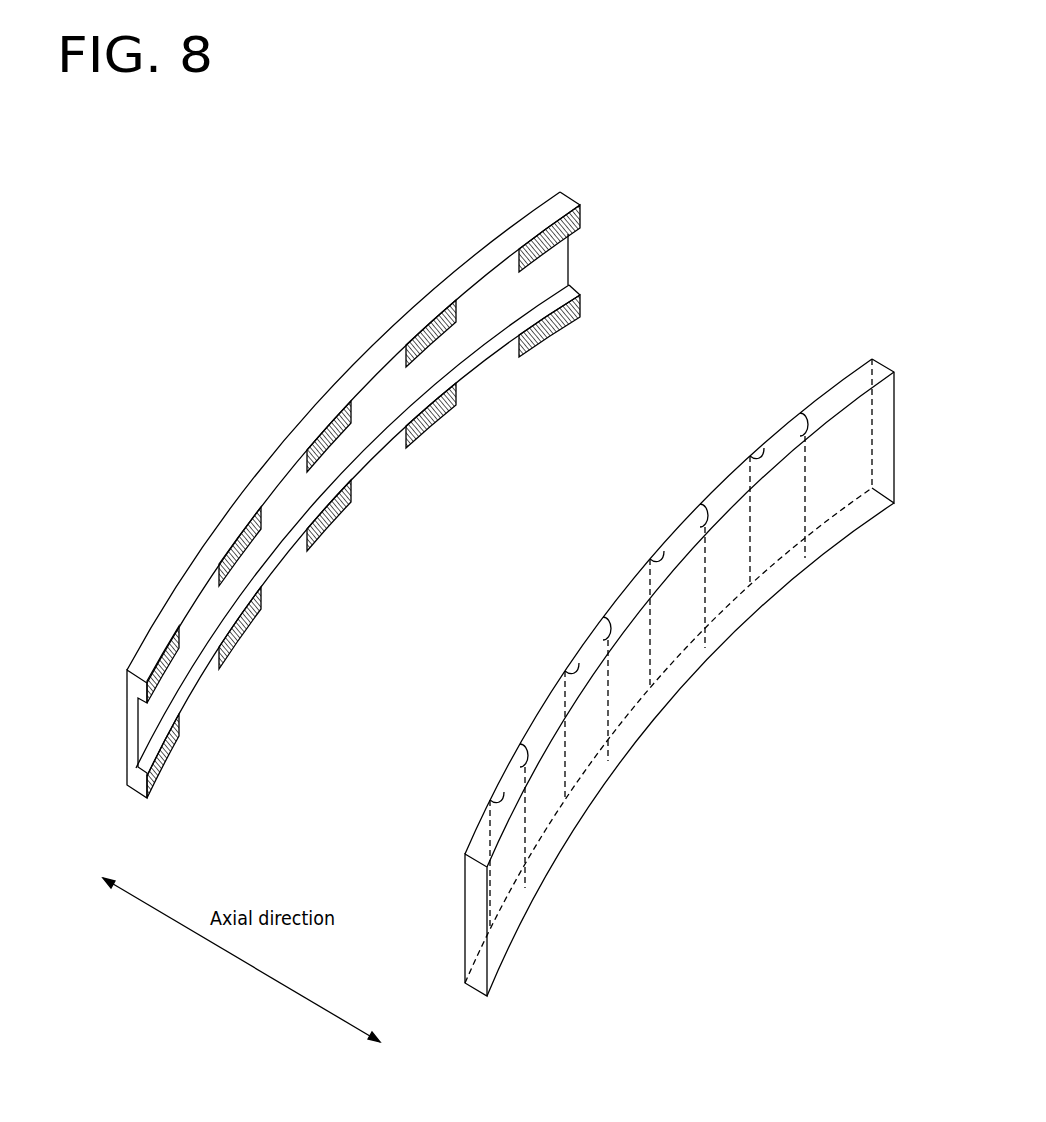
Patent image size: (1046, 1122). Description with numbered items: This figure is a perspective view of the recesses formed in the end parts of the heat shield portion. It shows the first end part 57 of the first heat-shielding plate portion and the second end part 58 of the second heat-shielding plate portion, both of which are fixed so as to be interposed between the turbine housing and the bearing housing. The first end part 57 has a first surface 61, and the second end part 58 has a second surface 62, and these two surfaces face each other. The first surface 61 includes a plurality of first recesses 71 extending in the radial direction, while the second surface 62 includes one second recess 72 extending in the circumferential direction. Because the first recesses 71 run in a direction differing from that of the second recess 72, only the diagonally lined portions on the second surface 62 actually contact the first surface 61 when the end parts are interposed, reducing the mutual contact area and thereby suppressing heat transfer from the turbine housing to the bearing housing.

The first end part 57 is at (878, 325).
The second end part 58 is at (568, 155).
The first surface 61 is at (830, 388).
The second surface 62 is at (588, 209).
The first recesses 71 is at (780, 438).
The second recess 72 is at (558, 261).